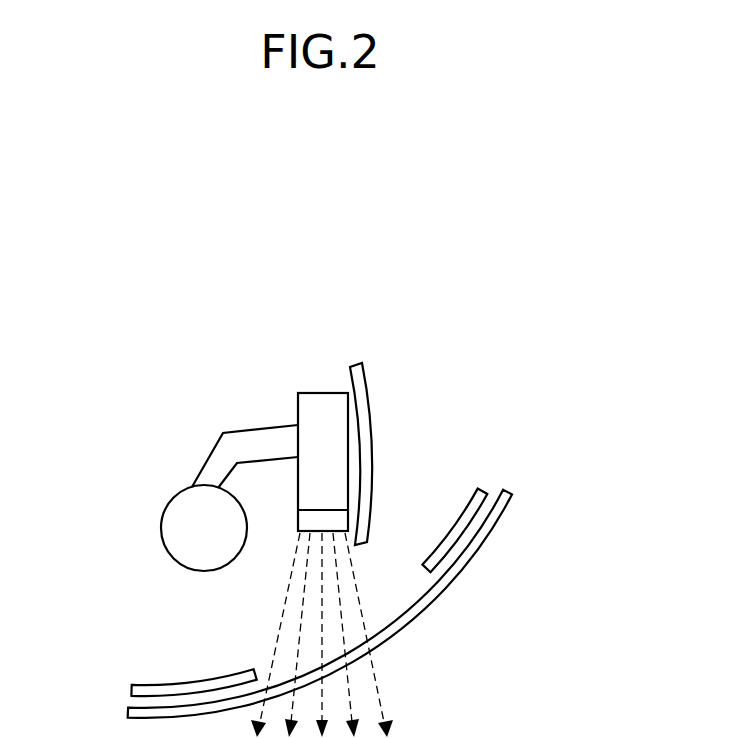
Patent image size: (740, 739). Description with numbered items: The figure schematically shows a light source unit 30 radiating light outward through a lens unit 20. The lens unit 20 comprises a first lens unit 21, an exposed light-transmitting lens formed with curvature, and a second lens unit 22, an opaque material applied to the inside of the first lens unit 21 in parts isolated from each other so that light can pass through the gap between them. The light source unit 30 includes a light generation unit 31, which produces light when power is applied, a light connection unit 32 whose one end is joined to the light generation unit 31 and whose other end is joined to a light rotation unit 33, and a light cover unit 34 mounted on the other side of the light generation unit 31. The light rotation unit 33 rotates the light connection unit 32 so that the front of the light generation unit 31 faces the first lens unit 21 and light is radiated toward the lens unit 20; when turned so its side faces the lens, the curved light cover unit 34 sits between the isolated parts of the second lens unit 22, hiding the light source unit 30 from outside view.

The lens unit 20 is at (598, 450).
The first lens unit 21 is at (450, 583).
The second lens unit 22 is at (478, 502).
The light source unit 30 is at (45, 330).
The light generation unit 31 is at (307, 417).
The light connection unit 32 is at (207, 460).
The light rotation unit 33 is at (167, 503).
The light cover unit 34 is at (350, 378).